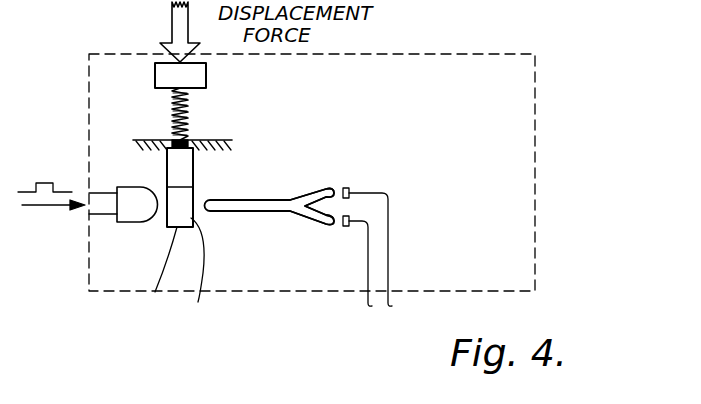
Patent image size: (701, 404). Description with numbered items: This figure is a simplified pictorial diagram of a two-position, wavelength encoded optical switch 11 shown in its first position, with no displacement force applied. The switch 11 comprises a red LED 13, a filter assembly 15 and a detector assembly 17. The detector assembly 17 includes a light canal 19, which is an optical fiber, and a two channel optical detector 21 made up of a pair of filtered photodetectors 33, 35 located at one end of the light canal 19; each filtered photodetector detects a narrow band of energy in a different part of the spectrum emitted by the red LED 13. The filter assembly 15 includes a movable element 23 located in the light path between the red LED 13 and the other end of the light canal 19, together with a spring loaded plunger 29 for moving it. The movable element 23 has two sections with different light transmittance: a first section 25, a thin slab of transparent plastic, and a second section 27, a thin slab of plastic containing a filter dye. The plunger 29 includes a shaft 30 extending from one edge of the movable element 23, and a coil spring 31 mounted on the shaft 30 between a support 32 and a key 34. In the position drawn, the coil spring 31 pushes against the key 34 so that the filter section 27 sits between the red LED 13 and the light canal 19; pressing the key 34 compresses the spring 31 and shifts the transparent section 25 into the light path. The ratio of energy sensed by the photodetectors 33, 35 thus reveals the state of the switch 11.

The wavelength encoded optical switch 11 is at (522, 76).
The red LED 13 is at (133, 186).
The filter assembly 15 is at (200, 125).
The detector assembly 17 is at (285, 188).
The light canal 19 is at (243, 200).
The two channel optical detector 21 is at (417, 216).
The movable element 23 is at (155, 277).
The first section 25 is at (183, 170).
The second section 27 is at (211, 270).
The spring loaded plunger 29 is at (148, 85).
The shaft 30 is at (172, 116).
The coil spring 31 is at (173, 110).
The support 32 is at (220, 138).
The filtered photodetector 33 is at (349, 188).
The key 34 is at (206, 76).
The filtered photodetector 35 is at (346, 227).